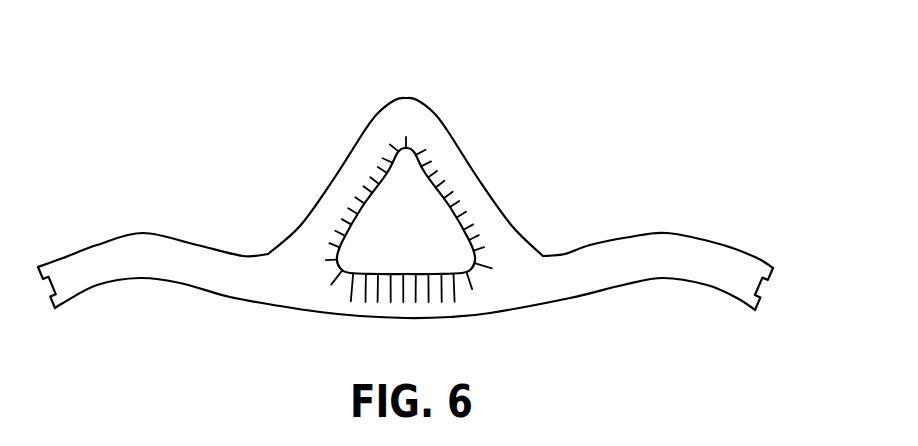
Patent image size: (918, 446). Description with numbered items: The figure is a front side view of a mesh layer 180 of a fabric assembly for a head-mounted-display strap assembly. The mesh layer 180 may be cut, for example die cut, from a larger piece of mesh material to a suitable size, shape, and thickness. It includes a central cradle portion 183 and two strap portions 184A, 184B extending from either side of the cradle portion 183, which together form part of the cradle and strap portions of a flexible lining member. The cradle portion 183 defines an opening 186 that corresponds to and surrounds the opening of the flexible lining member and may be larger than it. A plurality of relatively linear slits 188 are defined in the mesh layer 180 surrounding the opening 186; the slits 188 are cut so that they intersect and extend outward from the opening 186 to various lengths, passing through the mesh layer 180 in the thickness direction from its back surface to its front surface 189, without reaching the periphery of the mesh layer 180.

The mesh layer 180 is at (405, 207).
The cradle portion 183 is at (333, 181).
The strap portion 184A is at (101, 240).
The strap portion 184B is at (701, 236).
The opening 186 is at (430, 198).
The slits 188 is at (330, 285).
The front surface 189 is at (562, 281).